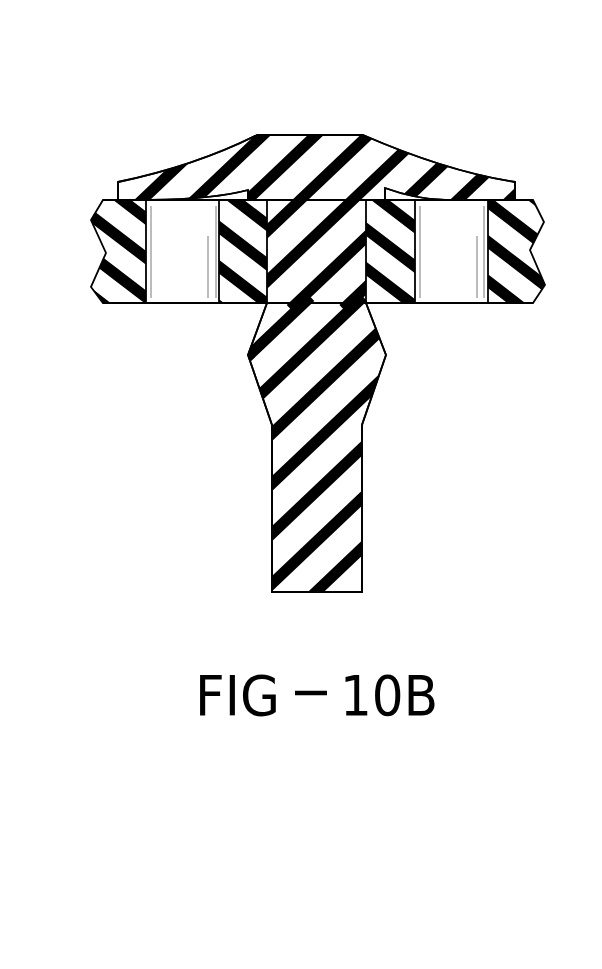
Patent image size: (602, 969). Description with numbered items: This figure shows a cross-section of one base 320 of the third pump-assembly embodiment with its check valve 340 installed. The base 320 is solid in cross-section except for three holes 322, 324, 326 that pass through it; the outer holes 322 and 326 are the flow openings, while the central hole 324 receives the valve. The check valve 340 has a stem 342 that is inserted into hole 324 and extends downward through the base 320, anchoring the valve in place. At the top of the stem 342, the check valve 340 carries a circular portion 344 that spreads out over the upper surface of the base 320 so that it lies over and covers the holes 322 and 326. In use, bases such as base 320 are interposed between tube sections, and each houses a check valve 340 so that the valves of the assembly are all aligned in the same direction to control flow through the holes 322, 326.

The check valve 340 is at (100, 120).
The base 320 is at (527, 200).
The hole 322 is at (172, 287).
The hole 324 is at (366, 226).
The hole 326 is at (463, 287).
The stem 342 is at (362, 480).
The circular portion 344 is at (182, 185).